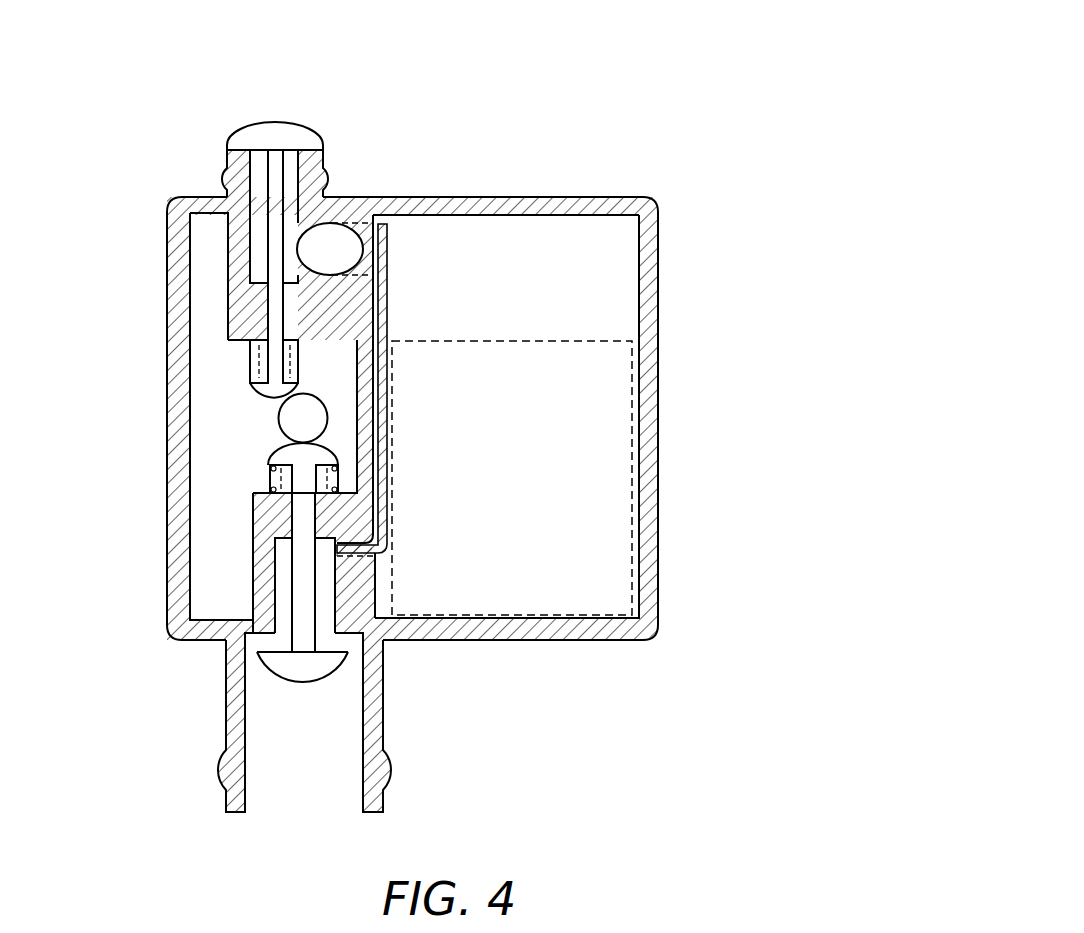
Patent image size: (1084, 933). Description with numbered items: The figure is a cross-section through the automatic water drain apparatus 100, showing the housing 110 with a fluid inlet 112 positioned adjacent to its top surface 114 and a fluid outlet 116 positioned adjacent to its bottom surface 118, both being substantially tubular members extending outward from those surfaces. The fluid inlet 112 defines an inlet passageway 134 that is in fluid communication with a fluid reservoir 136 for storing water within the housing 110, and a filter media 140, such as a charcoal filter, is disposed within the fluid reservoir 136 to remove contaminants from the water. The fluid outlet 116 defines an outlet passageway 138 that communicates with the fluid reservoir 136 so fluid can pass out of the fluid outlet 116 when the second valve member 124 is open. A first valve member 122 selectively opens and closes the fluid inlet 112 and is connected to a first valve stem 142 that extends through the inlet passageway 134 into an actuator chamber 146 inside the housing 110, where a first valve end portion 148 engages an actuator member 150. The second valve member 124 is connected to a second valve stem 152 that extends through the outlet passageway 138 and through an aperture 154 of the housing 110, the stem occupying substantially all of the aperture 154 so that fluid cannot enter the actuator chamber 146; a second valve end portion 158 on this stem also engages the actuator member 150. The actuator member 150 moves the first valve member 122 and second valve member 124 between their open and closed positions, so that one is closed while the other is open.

The automatic water drain apparatus 100 is at (672, 57).
The housing 110 is at (632, 197).
The fluid inlet 112 is at (323, 160).
The top surface 114 is at (540, 197).
The fluid outlet 116 is at (383, 714).
The bottom surface 118 is at (559, 641).
The first valve member 122 is at (293, 119).
The second valve member 124 is at (330, 683).
The inlet passageway 134 is at (336, 258).
The fluid reservoir 136 is at (599, 262).
The outlet passageway 138 is at (328, 578).
The filter media 140 is at (447, 341).
The first valve stem 142 is at (266, 237).
The actuator chamber 146 is at (244, 487).
The first valve end portion 148 is at (277, 405).
The actuator member 150 is at (280, 420).
The second valve stem 152 is at (328, 578).
The aperture 154 is at (300, 510).
The second valve end portion 158 is at (274, 452).